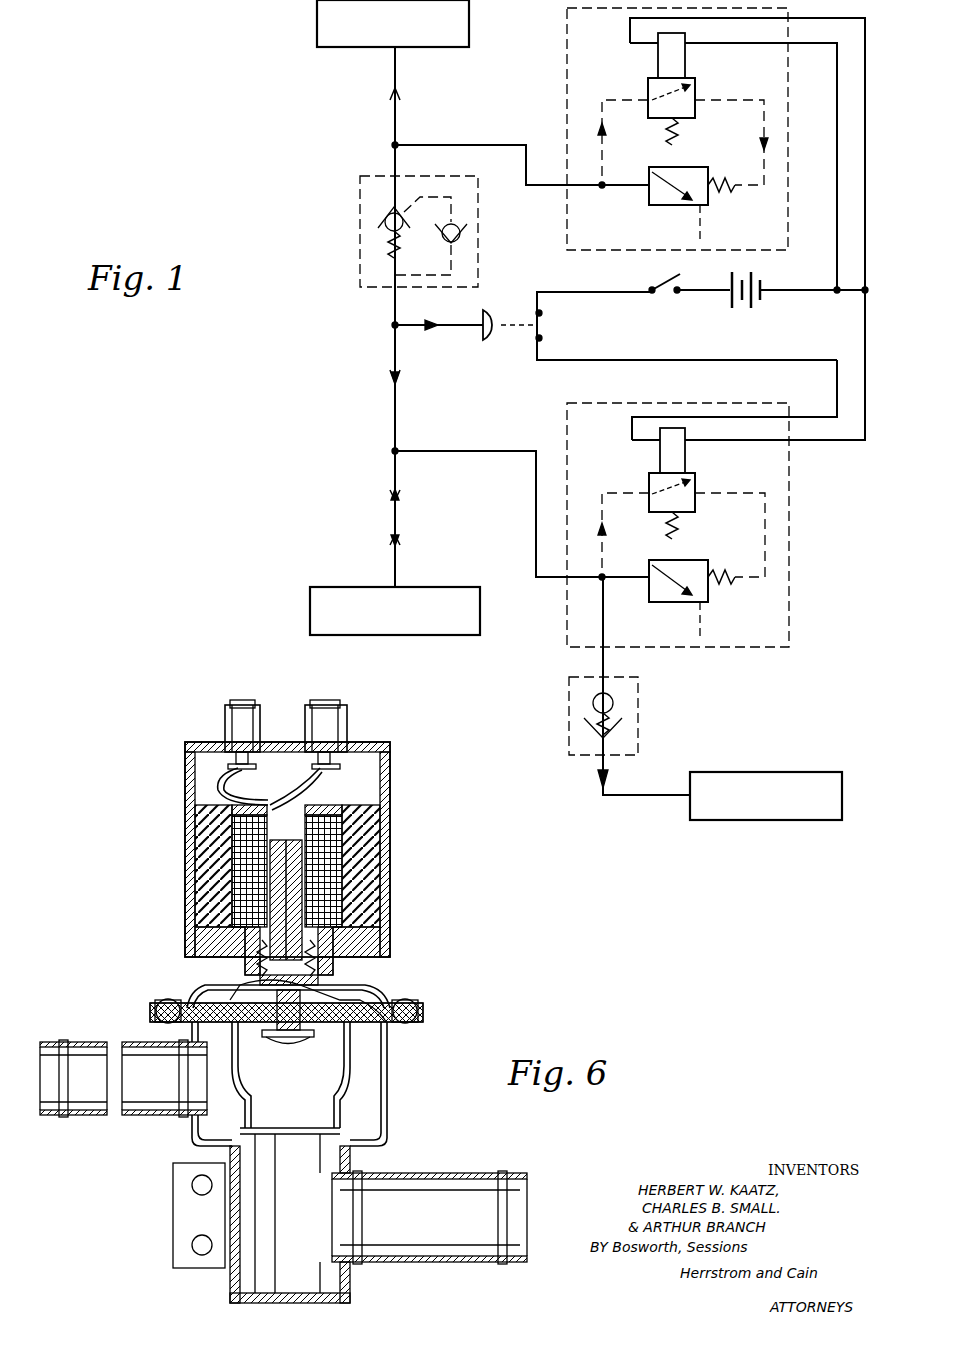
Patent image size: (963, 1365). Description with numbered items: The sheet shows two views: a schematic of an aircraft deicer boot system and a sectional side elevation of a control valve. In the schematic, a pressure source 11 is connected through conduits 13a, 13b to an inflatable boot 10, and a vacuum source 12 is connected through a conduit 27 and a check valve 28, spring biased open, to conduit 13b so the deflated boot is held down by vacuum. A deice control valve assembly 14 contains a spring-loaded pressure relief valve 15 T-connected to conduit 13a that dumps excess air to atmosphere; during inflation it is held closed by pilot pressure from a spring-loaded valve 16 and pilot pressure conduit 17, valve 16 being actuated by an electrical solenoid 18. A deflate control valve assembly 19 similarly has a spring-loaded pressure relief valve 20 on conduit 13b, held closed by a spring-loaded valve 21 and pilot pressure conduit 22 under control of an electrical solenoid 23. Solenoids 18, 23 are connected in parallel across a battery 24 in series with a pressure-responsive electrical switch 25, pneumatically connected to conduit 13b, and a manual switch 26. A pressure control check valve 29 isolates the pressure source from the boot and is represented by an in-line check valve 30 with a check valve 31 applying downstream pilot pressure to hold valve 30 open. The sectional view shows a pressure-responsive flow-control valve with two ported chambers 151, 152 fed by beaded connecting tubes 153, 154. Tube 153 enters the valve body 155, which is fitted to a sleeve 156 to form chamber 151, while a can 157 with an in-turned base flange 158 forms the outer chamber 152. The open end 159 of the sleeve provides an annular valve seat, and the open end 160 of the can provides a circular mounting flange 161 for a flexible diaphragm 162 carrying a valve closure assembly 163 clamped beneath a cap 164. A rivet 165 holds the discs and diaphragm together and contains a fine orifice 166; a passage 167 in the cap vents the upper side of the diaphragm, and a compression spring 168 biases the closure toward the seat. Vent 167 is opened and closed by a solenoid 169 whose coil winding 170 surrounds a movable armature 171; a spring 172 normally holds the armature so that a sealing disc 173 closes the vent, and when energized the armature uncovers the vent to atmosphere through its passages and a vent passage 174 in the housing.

In FIG. 1, the inflatable boot 10 is at (310, 612).
In FIG. 1, the pressure source 11 is at (317, 37).
In FIG. 1, the vacuum source 12 is at (790, 772).
In FIG. 1, the conduit 13a is at (395, 76).
In FIG. 1, the conduit 13b is at (395, 440).
In FIG. 1, the deice control valve assembly 14 is at (684, 149).
In FIG. 1, the spring-loaded pressure relief valve 15 is at (708, 203).
In FIG. 1, the spring-loaded valve 16 is at (695, 108).
In FIG. 1, the pilot pressure conduit 17 is at (618, 100).
In FIG. 1, the electrical solenoid 18 is at (685, 50).
In FIG. 1, the deflate control valve assembly 19 is at (716, 468).
In FIG. 1, the spring-loaded pressure relief valve 20 is at (708, 598).
In FIG. 1, the spring-loaded valve 21 is at (695, 503).
In FIG. 1, the pilot pressure conduit 22 is at (622, 493).
In FIG. 1, the electrical solenoid 23 is at (685, 445).
In FIG. 1, the battery 24 is at (735, 310).
In FIG. 1, the pressure-responsive electrical switch 25 is at (492, 343).
In FIG. 1, the manual switch 26 is at (662, 284).
In FIG. 1, the conduit 27 is at (652, 798).
In FIG. 1, the check valve 28 is at (640, 700).
In FIG. 1, the pressure control check valve 29 is at (413, 239).
In FIG. 1, the in-line check valve 30 is at (385, 216).
In FIG. 1, the check valve 31 is at (460, 236).
In FIG. 6, the ported chamber 151 is at (298, 1115).
In FIG. 6, the ported chamber 152 is at (180, 1120).
In FIG. 6, the beaded connecting tube 153 is at (462, 1174).
In FIG. 6, the beaded connecting tube 154 is at (112, 1118).
In FIG. 6, the valve body 155 is at (352, 1150).
In FIG. 6, the sleeve 156 is at (345, 1112).
In FIG. 6, the can 157 is at (388, 1100).
In FIG. 6, the in-turned base flange 158 is at (200, 1165).
In FIG. 6, the open end of sleeve 159 is at (355, 1045).
In FIG. 6, the open end of can 160 is at (165, 1022).
In FIG. 6, the circular mounting flange 161 is at (423, 1010).
In FIG. 6, the flexible diaphragm 162 is at (390, 1028).
In FIG. 6, the valve closure assembly 163 is at (262, 1040).
In FIG. 6, the cap 164 is at (200, 988).
In FIG. 6, the rivet 165 is at (292, 1035).
In FIG. 6, the fine orifice 166 is at (286, 1045).
In FIG. 6, the vent passage 167 is at (320, 977).
In FIG. 6, the compression spring 168 is at (368, 1005).
In FIG. 6, the solenoid 169 is at (182, 849).
In FIG. 6, the coil winding 170 is at (330, 848).
In FIG. 6, the movable armature 171 is at (300, 880).
In FIG. 6, the spring 172 is at (312, 954).
In FIG. 6, the sealing disc 173 is at (262, 975).
In FIG. 6, the vent passage 174 is at (292, 742).